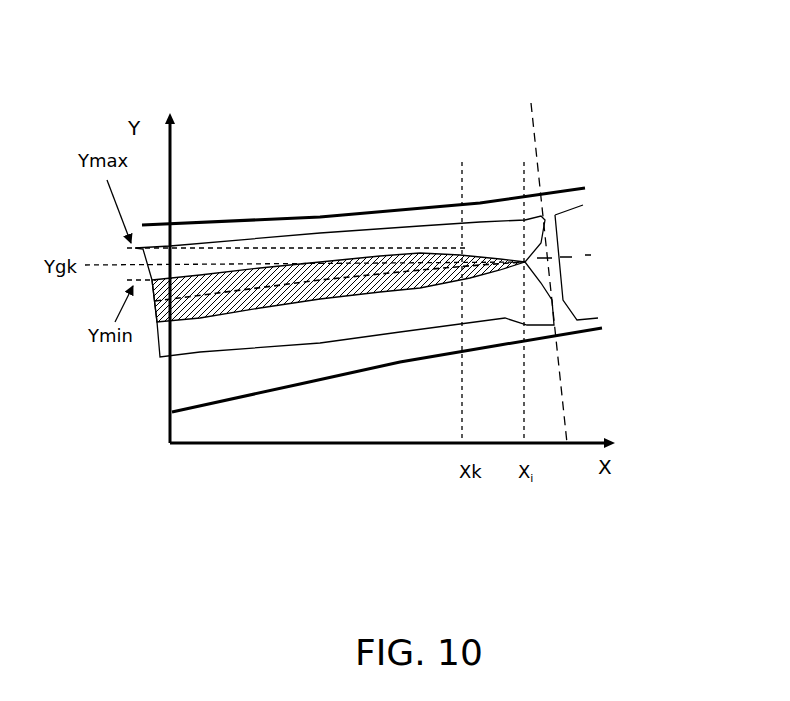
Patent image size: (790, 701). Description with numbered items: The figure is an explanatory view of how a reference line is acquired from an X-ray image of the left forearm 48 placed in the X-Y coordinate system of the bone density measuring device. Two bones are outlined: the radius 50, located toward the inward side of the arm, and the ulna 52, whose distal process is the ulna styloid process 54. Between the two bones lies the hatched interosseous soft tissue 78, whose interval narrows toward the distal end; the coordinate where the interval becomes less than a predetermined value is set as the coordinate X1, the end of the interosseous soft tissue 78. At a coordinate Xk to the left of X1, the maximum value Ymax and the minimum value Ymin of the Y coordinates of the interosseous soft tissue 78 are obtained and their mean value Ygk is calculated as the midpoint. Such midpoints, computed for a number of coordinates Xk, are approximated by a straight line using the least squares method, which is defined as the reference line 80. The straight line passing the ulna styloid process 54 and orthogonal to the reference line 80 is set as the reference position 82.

The left forearm 48 is at (236, 210).
The radius 50 is at (247, 337).
The ulna 52 is at (370, 237).
The ulna styloid process 54 is at (555, 215).
The interosseous soft tissue 78 is at (317, 310).
The reference line 80 is at (565, 256).
The reference position 82 is at (531, 105).